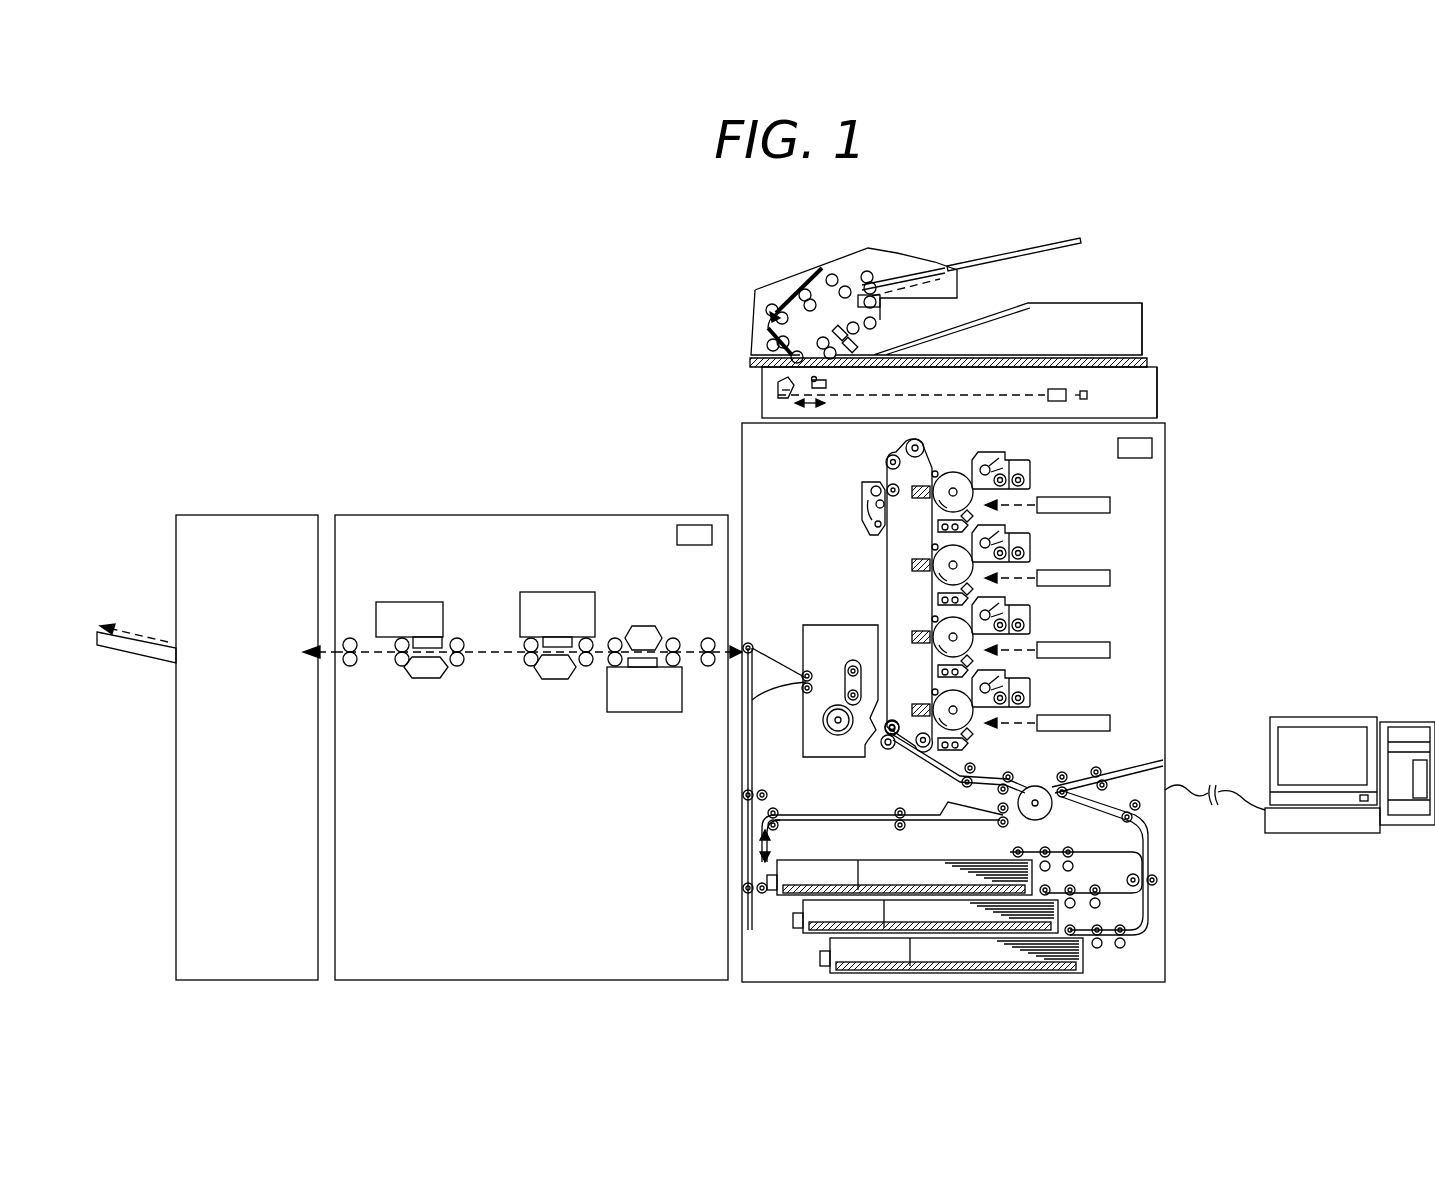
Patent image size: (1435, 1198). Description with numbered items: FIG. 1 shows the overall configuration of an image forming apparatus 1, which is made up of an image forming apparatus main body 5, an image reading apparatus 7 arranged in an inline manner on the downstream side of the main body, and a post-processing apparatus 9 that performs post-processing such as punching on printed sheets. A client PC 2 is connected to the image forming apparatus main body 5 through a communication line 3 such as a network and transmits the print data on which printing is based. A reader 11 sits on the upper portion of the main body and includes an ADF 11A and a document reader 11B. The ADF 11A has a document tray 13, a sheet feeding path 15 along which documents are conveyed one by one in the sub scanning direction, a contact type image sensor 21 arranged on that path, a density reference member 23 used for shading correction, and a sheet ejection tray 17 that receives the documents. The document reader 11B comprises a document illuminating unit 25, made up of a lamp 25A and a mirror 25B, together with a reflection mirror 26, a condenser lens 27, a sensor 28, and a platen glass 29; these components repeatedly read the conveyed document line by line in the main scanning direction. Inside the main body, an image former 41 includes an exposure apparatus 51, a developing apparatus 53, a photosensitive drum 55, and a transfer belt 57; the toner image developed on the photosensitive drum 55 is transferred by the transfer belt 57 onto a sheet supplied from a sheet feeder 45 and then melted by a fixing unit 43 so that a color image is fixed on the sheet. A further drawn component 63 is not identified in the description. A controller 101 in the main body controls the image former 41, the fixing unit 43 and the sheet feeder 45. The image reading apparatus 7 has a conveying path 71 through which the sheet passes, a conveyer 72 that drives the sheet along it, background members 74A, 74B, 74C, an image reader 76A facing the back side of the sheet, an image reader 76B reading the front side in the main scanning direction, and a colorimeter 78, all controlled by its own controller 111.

The image forming apparatus 1 is at (1122, 245).
The client PC 2 is at (1330, 717).
The communication line 3 is at (1240, 812).
The image forming apparatus main body 5 is at (1167, 442).
The image reading apparatus 7 is at (530, 513).
The post-processing apparatus 9 is at (268, 513).
The reader 11 is at (655, 272).
The ADF 11A is at (750, 303).
The document reader 11B is at (750, 367).
The document tray 13 is at (985, 258).
The sheet feeding path 15 is at (785, 300).
The sheet ejection tray 17 is at (1000, 310).
The contact type image sensor 21 is at (832, 333).
The density reference member 23 is at (878, 333).
The document illuminating unit 25 is at (792, 441).
The lamp 25A is at (828, 392).
The mirror 25B is at (830, 385).
The reflection mirror 26 is at (775, 388).
The condenser lens 27 is at (1055, 388).
The sensor 28 is at (1083, 390).
The platen glass 29 is at (1090, 373).
The image former 41 is at (858, 509).
The fixing unit 43 is at (818, 625).
The sheet feeder 45 is at (790, 975).
The exposure apparatus 51 is at (1065, 500).
The developing apparatus 53 is at (1020, 462).
The photosensitive drum 55 is at (953, 472).
The transfer belt 57 is at (886, 556).
The sheet conveyance path 63 is at (1138, 842).
The conveying path 71 is at (376, 658).
The conveyer 72 is at (350, 637).
The background member 74A is at (643, 624).
The background member 74B is at (557, 681).
The background member 74C is at (425, 680).
The image reader 76A is at (652, 713).
The image reader 76B is at (548, 591).
The colorimeter 78 is at (405, 601).
The controller 101 is at (1152, 442).
The controller 111 is at (698, 524).